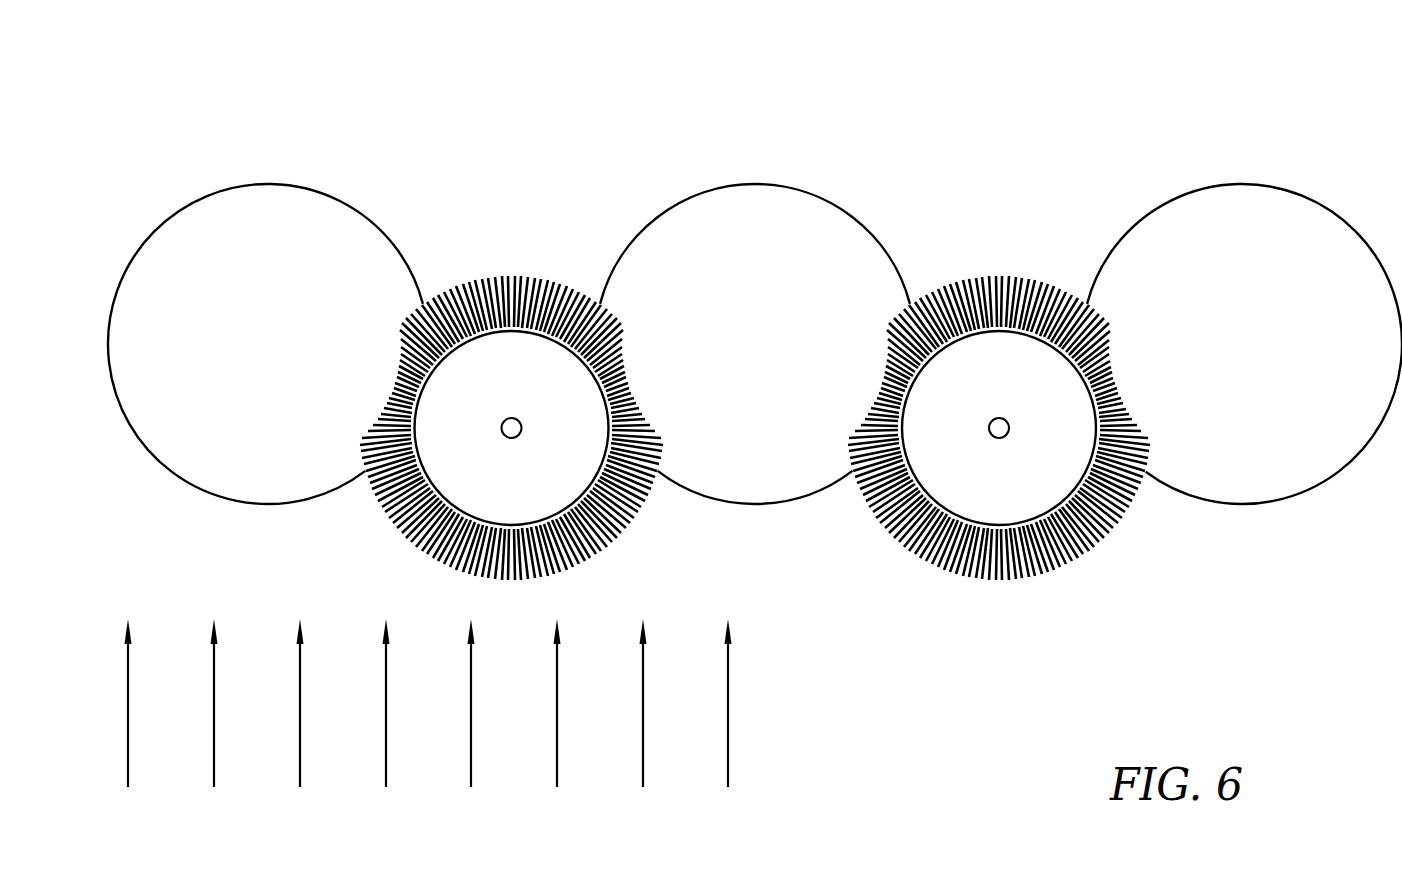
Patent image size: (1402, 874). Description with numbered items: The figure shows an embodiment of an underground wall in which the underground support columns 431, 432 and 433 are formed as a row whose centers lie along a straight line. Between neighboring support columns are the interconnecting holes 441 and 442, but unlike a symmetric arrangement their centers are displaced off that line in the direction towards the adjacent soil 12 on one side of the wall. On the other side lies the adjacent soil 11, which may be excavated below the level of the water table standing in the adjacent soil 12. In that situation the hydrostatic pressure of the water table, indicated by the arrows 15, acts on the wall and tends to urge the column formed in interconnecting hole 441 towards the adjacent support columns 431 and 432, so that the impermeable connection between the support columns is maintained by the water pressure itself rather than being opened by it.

The adjacent soil 11 is at (793, 47).
The adjacent soil 12 is at (872, 621).
The arrows 15 is at (490, 815).
The underground support column 431 is at (335, 190).
The underground support column 432 is at (807, 192).
The underground support column 433 is at (1288, 188).
The interconnecting hole 441 is at (513, 352).
The interconnecting hole 442 is at (1007, 345).